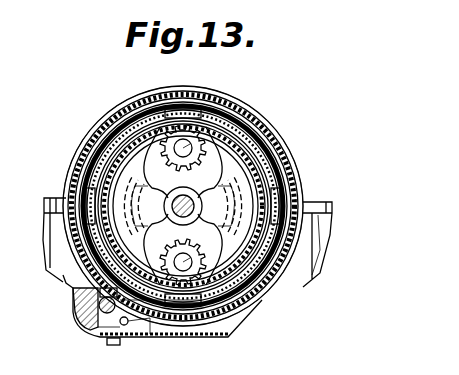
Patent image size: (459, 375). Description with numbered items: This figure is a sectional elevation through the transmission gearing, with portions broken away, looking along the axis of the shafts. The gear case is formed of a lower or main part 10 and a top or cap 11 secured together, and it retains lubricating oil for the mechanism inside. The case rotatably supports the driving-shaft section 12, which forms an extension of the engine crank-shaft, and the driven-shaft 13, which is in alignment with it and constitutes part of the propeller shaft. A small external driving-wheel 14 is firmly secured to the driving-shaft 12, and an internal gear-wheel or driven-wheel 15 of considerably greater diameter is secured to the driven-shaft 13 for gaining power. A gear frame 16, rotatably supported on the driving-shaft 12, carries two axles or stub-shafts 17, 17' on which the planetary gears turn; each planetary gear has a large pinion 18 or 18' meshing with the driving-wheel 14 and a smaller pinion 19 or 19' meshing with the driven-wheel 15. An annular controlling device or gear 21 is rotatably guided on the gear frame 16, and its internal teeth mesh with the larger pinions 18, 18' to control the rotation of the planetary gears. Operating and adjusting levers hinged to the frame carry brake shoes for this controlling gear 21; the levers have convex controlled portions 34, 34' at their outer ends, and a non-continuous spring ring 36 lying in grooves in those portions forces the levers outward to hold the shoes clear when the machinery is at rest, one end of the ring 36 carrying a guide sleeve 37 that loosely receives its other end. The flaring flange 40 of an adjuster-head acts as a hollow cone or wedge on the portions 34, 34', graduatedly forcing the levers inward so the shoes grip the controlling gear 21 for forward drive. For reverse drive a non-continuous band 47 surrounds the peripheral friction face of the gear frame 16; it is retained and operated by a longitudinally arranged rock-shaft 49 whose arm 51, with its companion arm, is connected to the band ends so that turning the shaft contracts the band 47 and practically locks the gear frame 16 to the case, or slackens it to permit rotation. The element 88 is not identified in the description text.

The lower or main part of gear case 10 is at (197, 334).
The top or cap of gear case 11 is at (142, 97).
The driving-shaft section 12 is at (183, 205).
The driven-shaft 13 is at (298, 152).
The external driving-wheel 14 is at (280, 148).
The internal gear-wheel or driven-wheel 15 is at (122, 187).
The gear frame 16 is at (127, 157).
The axle or stub-shaft 17 is at (183, 205).
The axle or stub-shaft 17' is at (192, 206).
The large gear wheel or pinion 18 is at (196, 205).
The large gear wheel or pinion 18' is at (199, 242).
The smaller wheel or pinion 19 is at (202, 206).
The smaller wheel or pinion 19' is at (332, 245).
The controlling device or gear 21 is at (217, 100).
The controlled portion of lever 34 is at (220, 180).
The controlled portion of lever 34' is at (173, 269).
The spring ring 36 is at (128, 102).
The guide sleeve 37 is at (103, 120).
The flange 40 is at (198, 109).
The non-continuous band 47 is at (146, 338).
The rock-shaft 49 is at (78, 305).
The arm 51 is at (130, 337).
The block 88 is at (257, 307).